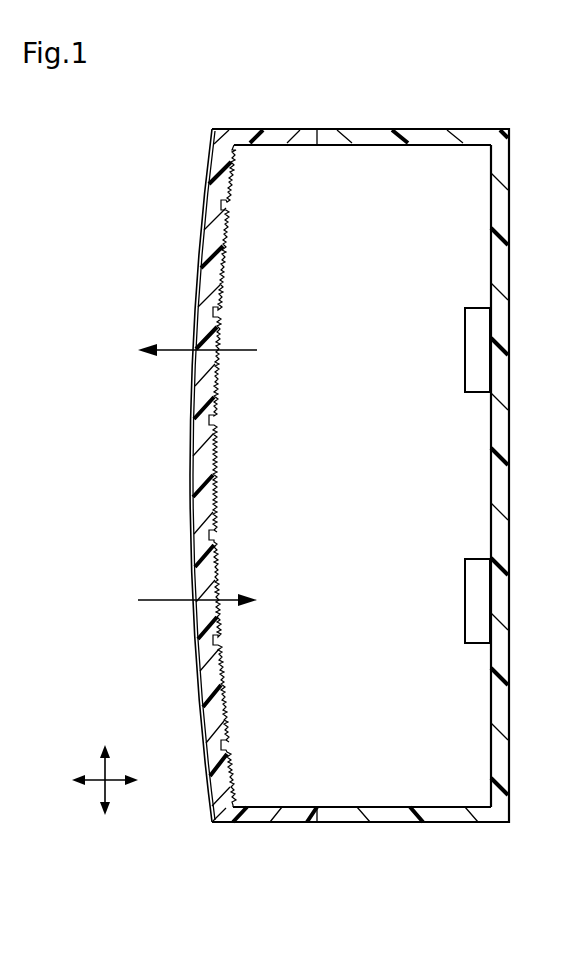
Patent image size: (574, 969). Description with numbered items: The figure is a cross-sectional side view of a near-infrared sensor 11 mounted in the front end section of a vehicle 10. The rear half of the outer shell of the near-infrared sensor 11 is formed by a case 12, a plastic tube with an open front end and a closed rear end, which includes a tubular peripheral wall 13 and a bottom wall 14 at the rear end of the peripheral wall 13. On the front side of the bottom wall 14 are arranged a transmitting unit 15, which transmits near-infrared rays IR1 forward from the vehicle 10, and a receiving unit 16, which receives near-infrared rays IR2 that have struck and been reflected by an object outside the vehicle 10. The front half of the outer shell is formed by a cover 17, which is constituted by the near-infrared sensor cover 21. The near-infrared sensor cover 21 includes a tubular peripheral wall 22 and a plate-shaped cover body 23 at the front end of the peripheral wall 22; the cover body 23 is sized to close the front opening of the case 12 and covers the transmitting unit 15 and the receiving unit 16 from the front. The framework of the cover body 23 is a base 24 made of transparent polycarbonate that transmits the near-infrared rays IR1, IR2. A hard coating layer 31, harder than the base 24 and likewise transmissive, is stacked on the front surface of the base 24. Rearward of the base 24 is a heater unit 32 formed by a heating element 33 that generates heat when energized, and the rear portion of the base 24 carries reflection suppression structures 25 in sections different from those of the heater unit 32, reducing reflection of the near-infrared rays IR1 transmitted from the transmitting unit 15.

The vehicle 10 is at (194, 108).
The near-infrared sensor 11 is at (192, 183).
The case 12 is at (530, 78).
The peripheral wall 13 is at (470, 137).
The bottom wall 14 is at (497, 158).
The transmitting unit 15 is at (477, 345).
The receiving unit 16 is at (477, 595).
The cover 17 is at (305, 522).
The near-infrared sensor cover 21 is at (268, 878).
The peripheral wall 22 is at (258, 815).
The cover body 23 is at (218, 782).
The base 24 is at (207, 283).
The reflection suppression structures 25 is at (232, 178).
The hard coating layer 31 is at (187, 410).
The heater unit 32 is at (270, 476).
The heating element 33 is at (250, 205).
The near-infrared rays IR1 is at (240, 353).
The near-infrared rays IR2 is at (230, 607).